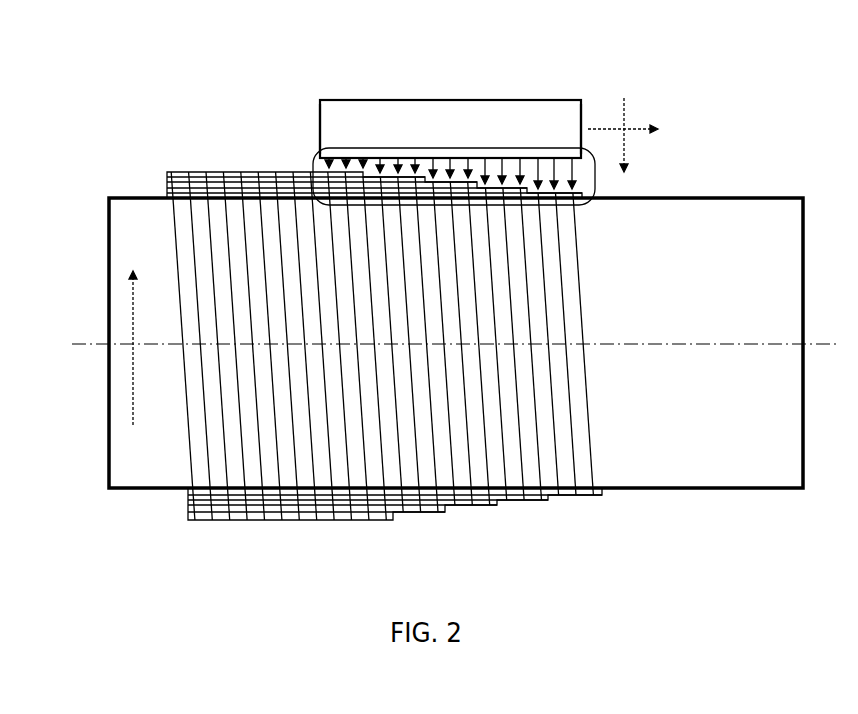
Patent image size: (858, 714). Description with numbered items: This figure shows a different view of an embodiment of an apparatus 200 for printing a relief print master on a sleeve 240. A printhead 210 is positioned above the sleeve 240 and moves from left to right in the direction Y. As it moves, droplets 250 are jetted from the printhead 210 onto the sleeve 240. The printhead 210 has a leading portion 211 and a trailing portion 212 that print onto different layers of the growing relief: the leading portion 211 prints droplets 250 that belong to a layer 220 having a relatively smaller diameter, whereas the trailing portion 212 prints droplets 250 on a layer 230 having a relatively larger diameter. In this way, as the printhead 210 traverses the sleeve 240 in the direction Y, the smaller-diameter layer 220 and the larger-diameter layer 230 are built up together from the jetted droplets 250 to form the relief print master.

The display device 200 is at (128, 162).
The printhead 210 is at (438, 122).
The leading portion of the printhead 211 is at (583, 120).
The trailing portion of the printhead 212 is at (318, 123).
The layer having a relatively smaller diameter 220 is at (580, 497).
The layer having a relatively larger diameter 230 is at (212, 518).
The sleeve 240 is at (710, 197).
The droplets 250 is at (310, 160).